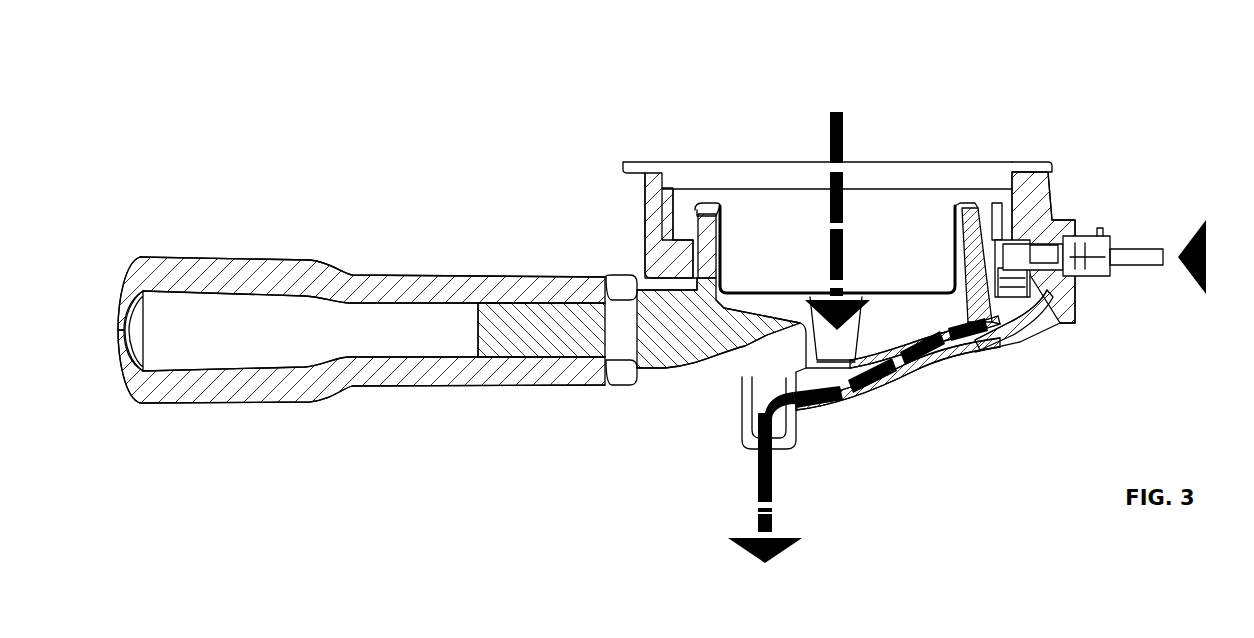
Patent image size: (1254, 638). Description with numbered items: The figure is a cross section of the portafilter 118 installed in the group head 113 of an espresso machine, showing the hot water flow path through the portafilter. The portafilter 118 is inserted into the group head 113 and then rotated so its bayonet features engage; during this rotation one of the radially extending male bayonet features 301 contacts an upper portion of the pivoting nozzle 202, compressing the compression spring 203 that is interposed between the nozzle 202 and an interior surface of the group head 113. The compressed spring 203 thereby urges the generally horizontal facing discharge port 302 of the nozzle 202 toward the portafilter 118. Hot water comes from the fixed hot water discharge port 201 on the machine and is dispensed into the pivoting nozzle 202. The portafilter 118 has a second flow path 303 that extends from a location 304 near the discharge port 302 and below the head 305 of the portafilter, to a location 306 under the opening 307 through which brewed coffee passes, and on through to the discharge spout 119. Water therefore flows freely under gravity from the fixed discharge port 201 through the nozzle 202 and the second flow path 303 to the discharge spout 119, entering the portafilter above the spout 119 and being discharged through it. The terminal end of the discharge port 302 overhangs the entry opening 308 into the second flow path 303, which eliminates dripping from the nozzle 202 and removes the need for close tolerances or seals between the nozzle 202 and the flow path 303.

The group head 113 is at (1060, 195).
The portafilter 118 is at (377, 308).
The discharge spout 119 is at (763, 395).
The fixed hot water discharge port 201 is at (1100, 230).
The pivoting nozzle 202 is at (1037, 327).
The compression spring 203 is at (1030, 195).
The male bayonet feature 301 is at (983, 207).
The discharge port 302 is at (970, 340).
The second flow path 303 is at (947, 340).
The location near the port 304 is at (963, 343).
The head 305 is at (913, 310).
The location under the opening 306 is at (830, 423).
The opening 307 is at (820, 350).
The entry opening 308 is at (977, 340).